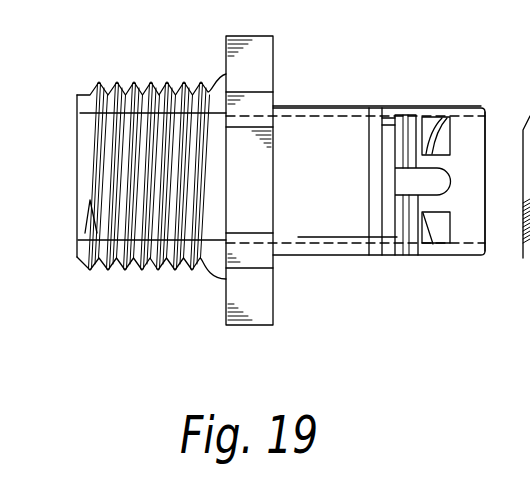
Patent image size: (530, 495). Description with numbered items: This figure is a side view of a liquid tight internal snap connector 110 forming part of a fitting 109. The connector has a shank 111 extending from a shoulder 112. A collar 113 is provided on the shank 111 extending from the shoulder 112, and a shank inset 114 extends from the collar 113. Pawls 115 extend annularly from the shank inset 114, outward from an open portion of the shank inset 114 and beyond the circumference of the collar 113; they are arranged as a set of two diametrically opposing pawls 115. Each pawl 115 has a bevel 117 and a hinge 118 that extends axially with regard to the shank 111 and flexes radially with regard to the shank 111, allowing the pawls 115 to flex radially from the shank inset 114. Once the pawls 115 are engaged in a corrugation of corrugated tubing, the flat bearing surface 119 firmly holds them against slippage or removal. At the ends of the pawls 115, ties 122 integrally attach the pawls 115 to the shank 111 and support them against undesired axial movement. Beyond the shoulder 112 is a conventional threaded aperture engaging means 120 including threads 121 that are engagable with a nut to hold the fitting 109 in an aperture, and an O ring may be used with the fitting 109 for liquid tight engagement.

The fitting 109 is at (444, 261).
The liquid tight internal snap connector 110 is at (400, 262).
The shank 111 is at (480, 105).
The shoulder 112 is at (274, 298).
The collar 113 is at (317, 256).
The shank inset 114 is at (475, 260).
The pawls 115 is at (406, 130).
The bevels 117 is at (418, 147).
The hinges 118 is at (437, 262).
The bearing surface 119 is at (392, 116).
The threaded aperture engaging means 120 is at (164, 272).
The threads 121 is at (134, 272).
The ties 122 is at (445, 118).